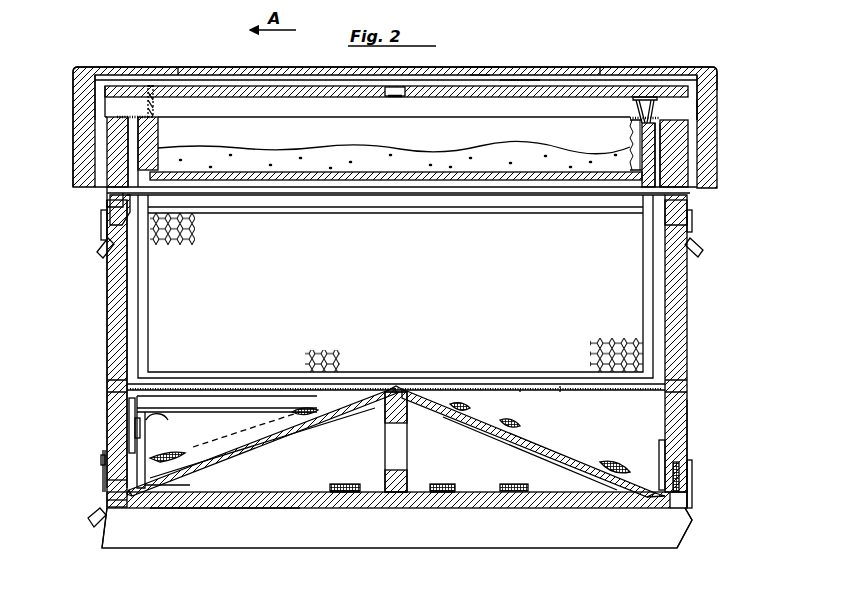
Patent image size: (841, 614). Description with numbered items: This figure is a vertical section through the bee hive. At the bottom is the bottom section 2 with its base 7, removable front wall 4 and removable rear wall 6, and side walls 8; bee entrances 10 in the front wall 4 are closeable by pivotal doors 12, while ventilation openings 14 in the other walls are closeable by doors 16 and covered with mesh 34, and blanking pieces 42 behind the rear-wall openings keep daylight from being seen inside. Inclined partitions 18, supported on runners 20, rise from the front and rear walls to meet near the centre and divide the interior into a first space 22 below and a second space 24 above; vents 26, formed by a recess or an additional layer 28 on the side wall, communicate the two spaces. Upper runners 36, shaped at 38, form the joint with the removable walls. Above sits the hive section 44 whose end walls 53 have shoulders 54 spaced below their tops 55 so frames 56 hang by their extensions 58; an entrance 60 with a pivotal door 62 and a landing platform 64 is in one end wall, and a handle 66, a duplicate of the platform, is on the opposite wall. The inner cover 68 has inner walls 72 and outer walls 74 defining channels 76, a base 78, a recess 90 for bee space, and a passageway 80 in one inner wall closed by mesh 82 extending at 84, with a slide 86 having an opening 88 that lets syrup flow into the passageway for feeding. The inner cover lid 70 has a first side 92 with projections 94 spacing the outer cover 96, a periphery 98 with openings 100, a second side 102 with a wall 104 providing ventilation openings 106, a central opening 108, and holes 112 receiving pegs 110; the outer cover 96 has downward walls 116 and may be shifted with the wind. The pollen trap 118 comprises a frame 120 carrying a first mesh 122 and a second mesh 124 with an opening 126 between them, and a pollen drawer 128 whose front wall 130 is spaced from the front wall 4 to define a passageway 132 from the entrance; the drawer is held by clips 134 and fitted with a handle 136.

The bottom section 2 is at (388, 512).
The front wall 4 is at (105, 456).
The rear wall 6 is at (688, 412).
The base 7 is at (588, 510).
The side walls 8 is at (560, 384).
The bee entrances 10 is at (108, 500).
The pivotal doors 12 is at (110, 486).
The ventilation openings 14 is at (330, 494).
The doors 16 is at (692, 500).
The inclined partitions 18 is at (290, 432).
The runners 20 is at (397, 387).
The first space 22 is at (200, 510).
The second space 24 is at (612, 420).
The vents 26 is at (262, 453).
The additional layer 28 is at (512, 384).
The mesh 34 is at (340, 484).
The upper runners 36 is at (108, 374).
The shaped portion 38 is at (118, 390).
The blanking pieces 42 is at (662, 460).
The hive section 44 is at (105, 290).
The end walls 53 is at (118, 300).
The shoulders 54 is at (688, 215).
The tops 55 is at (690, 196).
The frames 56 is at (238, 214).
The extensions 58 is at (693, 230).
The entrance 60 is at (112, 212).
The pivotal door 62 is at (104, 230).
The landing platforms 64 is at (100, 250).
The handle 66 is at (704, 254).
The inner cover 68 is at (243, 112).
The inner cover lid 70 is at (476, 84).
The inner walls 72 is at (160, 132).
The outer walls 74 is at (112, 128).
The channels 76 is at (133, 148).
The base 78 is at (316, 174).
The passageway 80 is at (672, 120).
The mesh 82 is at (702, 108).
The mesh extension 84 is at (648, 105).
The slide 86 is at (633, 140).
The opening 88 is at (620, 200).
The recess 90 is at (110, 198).
The first side 92 is at (282, 70).
The projections 94 is at (190, 76).
The outer cover 96 is at (478, 68).
The periphery 98 is at (694, 78).
The openings 100 is at (118, 80).
The second side 102 is at (518, 95).
The wall 104 is at (625, 100).
The ventilation openings 106 is at (110, 92).
The central opening 108 is at (395, 93).
The pegs 110 is at (155, 104).
The holes 112 is at (147, 86).
The walls 116 is at (120, 103).
The pollen trap 118 is at (236, 390).
The frame 120 is at (258, 392).
The first mesh 122 is at (198, 414).
The second mesh 124 is at (203, 396).
The opening 126 is at (132, 410).
The pollen drawer 128 is at (182, 510).
The front wall 130 is at (104, 530).
The passageway 132 is at (135, 428).
The clips 134 is at (370, 350).
The handle 136 is at (104, 462).